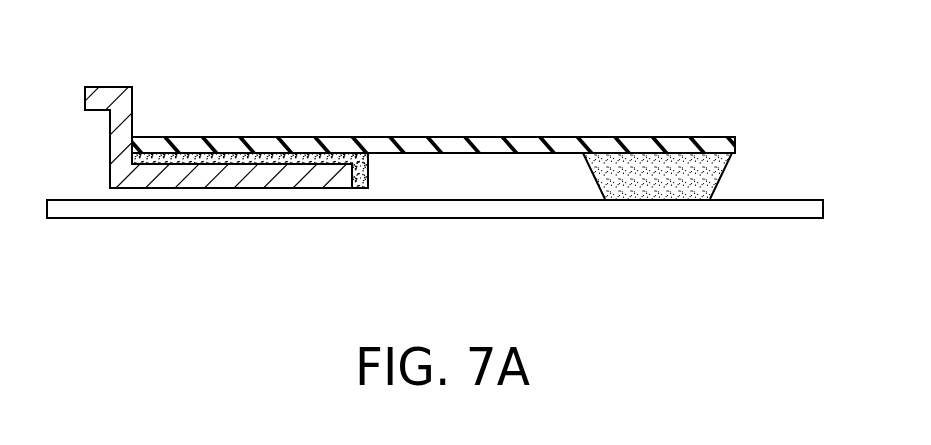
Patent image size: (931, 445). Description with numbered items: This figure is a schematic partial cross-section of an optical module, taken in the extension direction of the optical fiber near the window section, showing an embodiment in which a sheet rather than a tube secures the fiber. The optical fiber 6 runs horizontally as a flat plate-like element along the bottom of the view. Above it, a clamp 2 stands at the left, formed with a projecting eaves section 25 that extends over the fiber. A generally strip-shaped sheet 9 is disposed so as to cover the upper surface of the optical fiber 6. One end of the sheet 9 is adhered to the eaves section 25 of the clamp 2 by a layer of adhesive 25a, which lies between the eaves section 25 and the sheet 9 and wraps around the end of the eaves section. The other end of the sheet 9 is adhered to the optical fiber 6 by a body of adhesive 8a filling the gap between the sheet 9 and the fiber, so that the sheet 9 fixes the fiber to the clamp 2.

The clamp 2 is at (120, 88).
The optical fiber 6 is at (78, 207).
The adhesive 8a is at (725, 172).
The sheet 9 is at (487, 138).
The eaves section 25 is at (208, 157).
The adhesive 25a is at (337, 158).